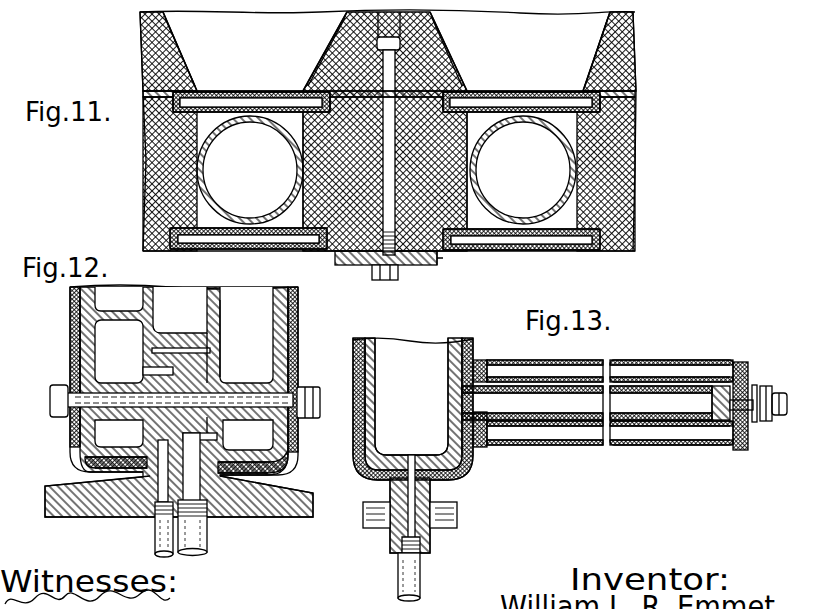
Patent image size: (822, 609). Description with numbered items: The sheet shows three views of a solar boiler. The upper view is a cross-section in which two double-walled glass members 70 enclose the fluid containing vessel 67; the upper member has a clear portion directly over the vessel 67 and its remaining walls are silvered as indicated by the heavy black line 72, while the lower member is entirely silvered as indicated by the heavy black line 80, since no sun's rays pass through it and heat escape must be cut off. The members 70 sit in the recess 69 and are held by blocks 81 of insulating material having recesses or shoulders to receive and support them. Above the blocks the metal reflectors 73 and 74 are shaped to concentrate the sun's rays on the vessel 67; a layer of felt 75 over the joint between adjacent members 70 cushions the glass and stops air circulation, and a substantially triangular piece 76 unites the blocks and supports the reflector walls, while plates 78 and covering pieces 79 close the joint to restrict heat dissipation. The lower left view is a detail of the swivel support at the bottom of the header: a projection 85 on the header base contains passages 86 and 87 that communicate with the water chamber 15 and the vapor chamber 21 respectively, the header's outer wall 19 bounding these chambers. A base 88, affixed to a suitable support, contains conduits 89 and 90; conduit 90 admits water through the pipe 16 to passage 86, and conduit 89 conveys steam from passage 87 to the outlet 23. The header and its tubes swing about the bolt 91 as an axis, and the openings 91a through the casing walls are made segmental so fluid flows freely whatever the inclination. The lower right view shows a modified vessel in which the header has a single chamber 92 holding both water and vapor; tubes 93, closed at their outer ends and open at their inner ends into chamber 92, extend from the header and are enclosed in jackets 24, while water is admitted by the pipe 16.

In FIG. 12, the central longitudinal chamber 15 is at (181, 360).
In FIG. 12, the pipe 16 is at (156, 546).
In FIG. 13, the pipe 16 is at (420, 570).
In FIG. 12, the outer wall 19 is at (296, 320).
In FIG. 12, the chamber 21 is at (184, 368).
In FIG. 12, the outlet 23 is at (206, 550).
In FIG. 13, the jacket 24 is at (668, 367).
In FIG. 11, the fluid containing vessel 67 is at (288, 139).
In FIG. 11, the recess 69 is at (146, 100).
In FIG. 11, the double-walled glass jacket 70 is at (249, 97).
In FIG. 11, the silvered portion 72 is at (192, 97).
In FIG. 11, the metal reflector 73 is at (168, 32).
In FIG. 11, the metal reflector 74 is at (343, 26).
In FIG. 11, the layer of felt 75 is at (171, 80).
In FIG. 11, the triangular shaped piece 76 is at (336, 48).
In FIG. 11, the plate 78 is at (418, 266).
In FIG. 11, the piece 79 is at (455, 258).
In FIG. 11, the silvered portion 80 is at (271, 238).
In FIG. 11, the block of insulating material 81 is at (147, 180).
In FIG. 12, the projection 85 is at (76, 365).
In FIG. 12, the passage 86 is at (119, 352).
In FIG. 12, the passage 87 is at (243, 344).
In FIG. 12, the base 88 is at (261, 508).
In FIG. 12, the conduit 89 is at (215, 500).
In FIG. 12, the conduit 90 is at (162, 487).
In FIG. 12, the bolt 91 is at (200, 436).
In FIG. 12, the opening 91a is at (143, 370).
In FIG. 13, the single chamber 92 is at (413, 445).
In FIG. 13, the tube 93 is at (536, 413).